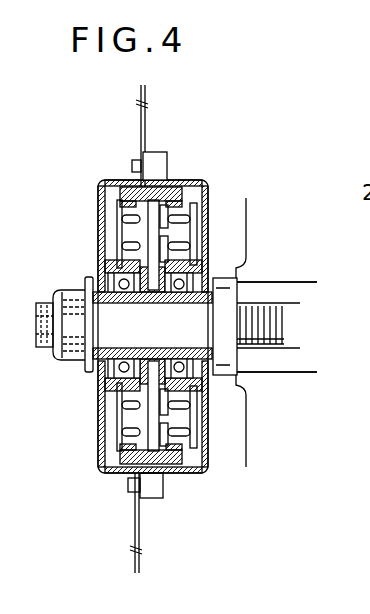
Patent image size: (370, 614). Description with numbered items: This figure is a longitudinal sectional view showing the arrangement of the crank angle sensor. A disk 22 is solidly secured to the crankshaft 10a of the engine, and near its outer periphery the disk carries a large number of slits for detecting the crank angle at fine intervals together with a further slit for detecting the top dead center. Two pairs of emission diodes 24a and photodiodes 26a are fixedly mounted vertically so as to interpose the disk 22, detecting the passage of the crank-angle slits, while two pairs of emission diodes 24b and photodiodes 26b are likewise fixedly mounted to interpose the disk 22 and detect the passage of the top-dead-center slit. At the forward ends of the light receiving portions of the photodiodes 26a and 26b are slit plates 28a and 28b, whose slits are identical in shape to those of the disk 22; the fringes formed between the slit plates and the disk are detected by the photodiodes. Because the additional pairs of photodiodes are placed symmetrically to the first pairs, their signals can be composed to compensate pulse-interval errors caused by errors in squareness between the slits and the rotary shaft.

The crankshaft 10a is at (299, 282).
The disk 22 is at (152, 180).
The emission diodes 24a is at (120, 215).
The emission diodes 24b is at (117, 246).
The photodiodes 26a is at (207, 205).
The photodiodes 26b is at (197, 240).
The slit plate 28a is at (177, 187).
The slit plate 28b is at (197, 252).